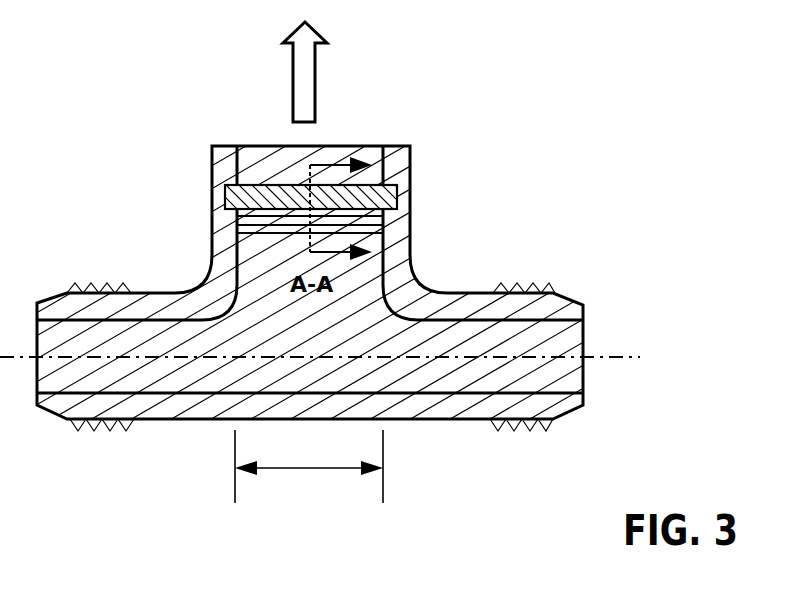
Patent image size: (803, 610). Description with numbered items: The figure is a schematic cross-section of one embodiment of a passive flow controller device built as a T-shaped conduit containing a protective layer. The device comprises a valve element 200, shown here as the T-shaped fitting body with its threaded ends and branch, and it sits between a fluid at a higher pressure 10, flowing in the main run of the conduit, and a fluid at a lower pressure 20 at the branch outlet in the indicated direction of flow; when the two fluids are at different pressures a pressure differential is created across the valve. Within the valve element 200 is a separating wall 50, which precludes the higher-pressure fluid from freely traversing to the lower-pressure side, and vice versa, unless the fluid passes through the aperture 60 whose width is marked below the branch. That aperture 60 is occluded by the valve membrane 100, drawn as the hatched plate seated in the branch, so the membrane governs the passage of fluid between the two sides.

The fluid at a higher pressure 10 is at (268, 343).
The fluid at a lower pressure 20 is at (256, 109).
The separating wall 50 is at (208, 227).
The aperture 60 is at (340, 466).
The valve membrane 100 is at (422, 233).
The valve element 200 is at (620, 145).